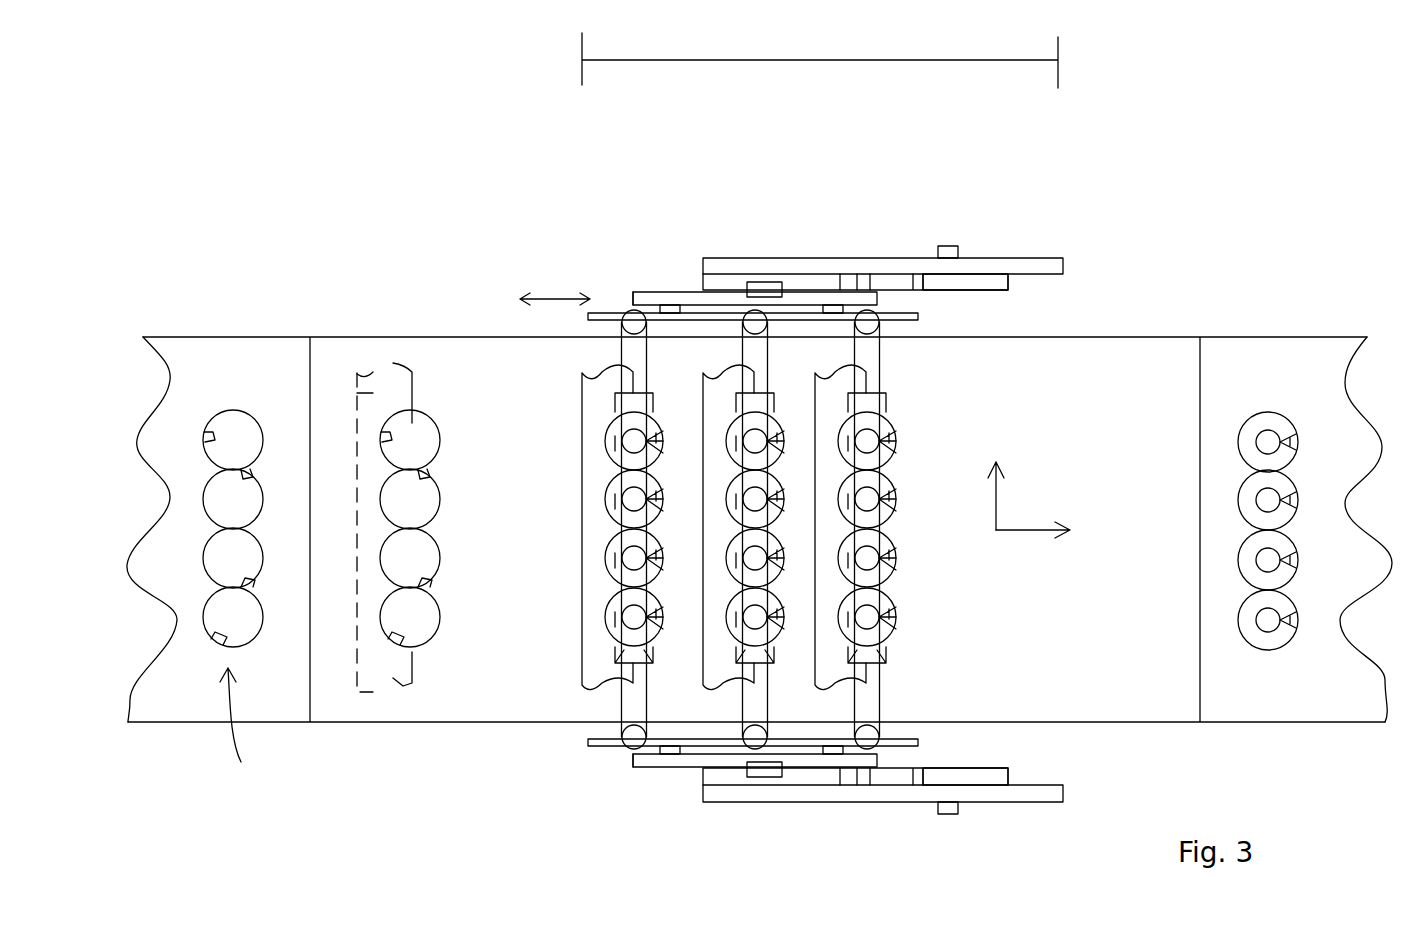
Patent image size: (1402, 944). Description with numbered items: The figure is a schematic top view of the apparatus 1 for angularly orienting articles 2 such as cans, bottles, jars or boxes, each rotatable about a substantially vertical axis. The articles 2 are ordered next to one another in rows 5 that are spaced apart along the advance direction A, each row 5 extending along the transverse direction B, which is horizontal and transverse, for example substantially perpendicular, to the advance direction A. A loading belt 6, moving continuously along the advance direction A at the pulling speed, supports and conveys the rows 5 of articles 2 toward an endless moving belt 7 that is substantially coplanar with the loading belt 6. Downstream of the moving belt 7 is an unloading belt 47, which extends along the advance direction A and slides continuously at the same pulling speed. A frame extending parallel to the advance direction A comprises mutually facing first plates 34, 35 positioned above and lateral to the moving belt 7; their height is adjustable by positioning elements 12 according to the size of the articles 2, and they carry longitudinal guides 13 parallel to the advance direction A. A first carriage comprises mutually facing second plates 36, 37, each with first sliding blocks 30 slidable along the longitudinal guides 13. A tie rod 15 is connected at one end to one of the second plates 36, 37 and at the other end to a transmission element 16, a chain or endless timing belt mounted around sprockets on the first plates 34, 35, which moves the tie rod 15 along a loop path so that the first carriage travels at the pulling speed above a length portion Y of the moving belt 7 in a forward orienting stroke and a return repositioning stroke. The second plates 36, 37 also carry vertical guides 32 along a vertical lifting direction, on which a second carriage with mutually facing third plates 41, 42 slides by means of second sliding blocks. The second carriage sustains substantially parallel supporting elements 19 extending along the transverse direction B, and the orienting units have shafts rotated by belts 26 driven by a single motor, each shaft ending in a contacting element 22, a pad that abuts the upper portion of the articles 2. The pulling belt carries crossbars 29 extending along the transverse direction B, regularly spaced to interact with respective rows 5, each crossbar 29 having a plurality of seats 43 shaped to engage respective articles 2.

The apparatus 1 is at (997, 195).
The articles 2 is at (410, 425).
The rows 5 is at (234, 730).
The loading belt 6 is at (187, 694).
The moving belt 7 is at (490, 700).
The positioning elements 12 is at (947, 246).
The longitudinal guides 13 is at (710, 280).
The tie rod 15 is at (846, 282).
The transmission element 16 is at (975, 286).
The supporting elements 19 is at (615, 660).
The contacting element 22 is at (637, 437).
The belts 26 is at (622, 340).
The crossbars 29 is at (355, 388).
The first sliding blocks 30 is at (757, 284).
The vertical guides 32 is at (850, 298).
The first plate 34 is at (797, 790).
The first plate 35 is at (795, 262).
The second plate 36 is at (645, 758).
The second plate 37 is at (650, 292).
The third plate 41 is at (597, 744).
The third plate 42 is at (603, 313).
The seats 43 is at (383, 620).
The unloading belt 47 is at (1315, 695).
The length portion Y is at (798, 62).
The advance direction A is at (1028, 534).
The transverse direction B is at (996, 492).